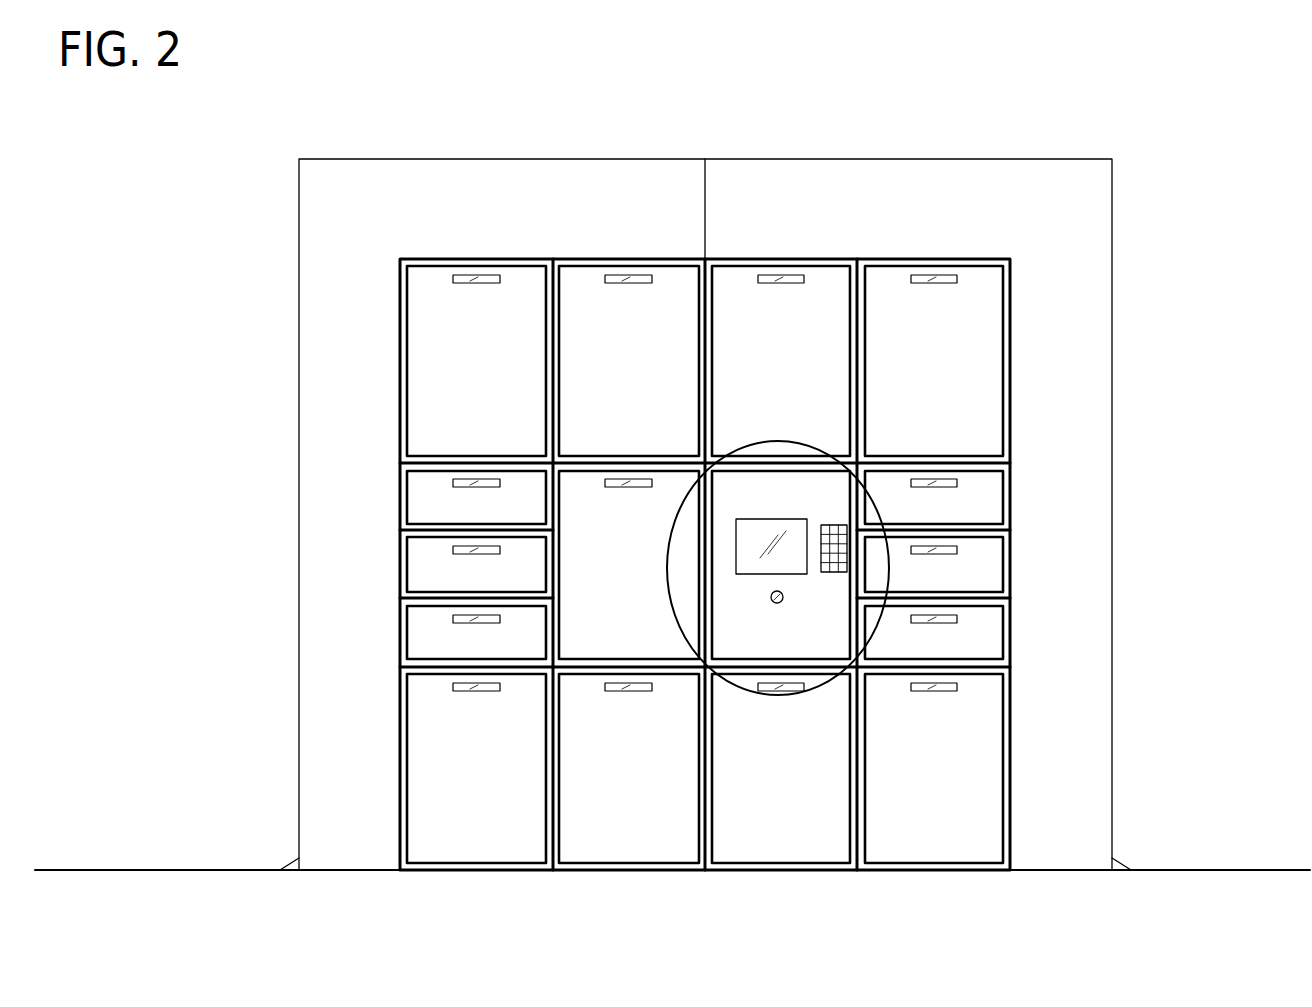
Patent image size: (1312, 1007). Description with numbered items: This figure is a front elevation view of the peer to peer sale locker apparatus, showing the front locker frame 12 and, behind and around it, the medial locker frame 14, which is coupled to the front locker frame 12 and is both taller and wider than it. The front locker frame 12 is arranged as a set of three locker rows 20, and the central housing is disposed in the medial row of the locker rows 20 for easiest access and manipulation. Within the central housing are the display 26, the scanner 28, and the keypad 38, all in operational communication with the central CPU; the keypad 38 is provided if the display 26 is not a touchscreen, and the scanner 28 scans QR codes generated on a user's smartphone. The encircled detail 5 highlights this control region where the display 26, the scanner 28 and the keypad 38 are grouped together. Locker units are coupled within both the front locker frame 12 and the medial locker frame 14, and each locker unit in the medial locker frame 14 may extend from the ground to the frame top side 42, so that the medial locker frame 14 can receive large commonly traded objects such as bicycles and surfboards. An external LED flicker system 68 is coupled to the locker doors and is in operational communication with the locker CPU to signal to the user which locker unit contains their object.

The user interface / control panel 5 is at (778, 548).
The front locker frame 12 is at (703, 607).
The medial locker frame 14 is at (1077, 581).
The locker rows 20 is at (400, 752).
The display 26 is at (790, 528).
The scanner 28 is at (778, 604).
The keypad 38 is at (832, 573).
The frame top side 42 is at (893, 643).
The external LED flicker system 68 is at (945, 280).